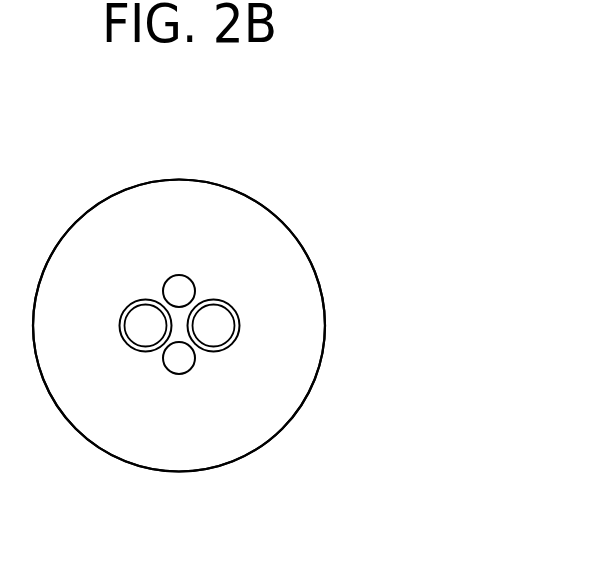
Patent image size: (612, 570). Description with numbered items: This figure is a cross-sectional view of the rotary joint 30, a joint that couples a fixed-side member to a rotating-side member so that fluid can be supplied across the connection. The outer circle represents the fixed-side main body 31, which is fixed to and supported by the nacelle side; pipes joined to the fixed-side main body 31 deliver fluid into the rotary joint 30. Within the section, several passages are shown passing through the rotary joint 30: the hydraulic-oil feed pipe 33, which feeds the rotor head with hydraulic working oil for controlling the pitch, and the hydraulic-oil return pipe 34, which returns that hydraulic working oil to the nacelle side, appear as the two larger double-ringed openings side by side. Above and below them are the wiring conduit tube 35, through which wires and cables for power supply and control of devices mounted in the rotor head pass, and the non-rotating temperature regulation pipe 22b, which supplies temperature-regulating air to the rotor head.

The rotary joint 30 is at (273, 213).
The fixed-side main body 31 is at (320, 367).
The hydraulic-oil feed pipe 33 is at (236, 307).
The hydraulic-oil return pipe 34 is at (121, 304).
The wiring conduit tube 35 is at (177, 274).
The temperature regulation pipe 22b is at (180, 375).